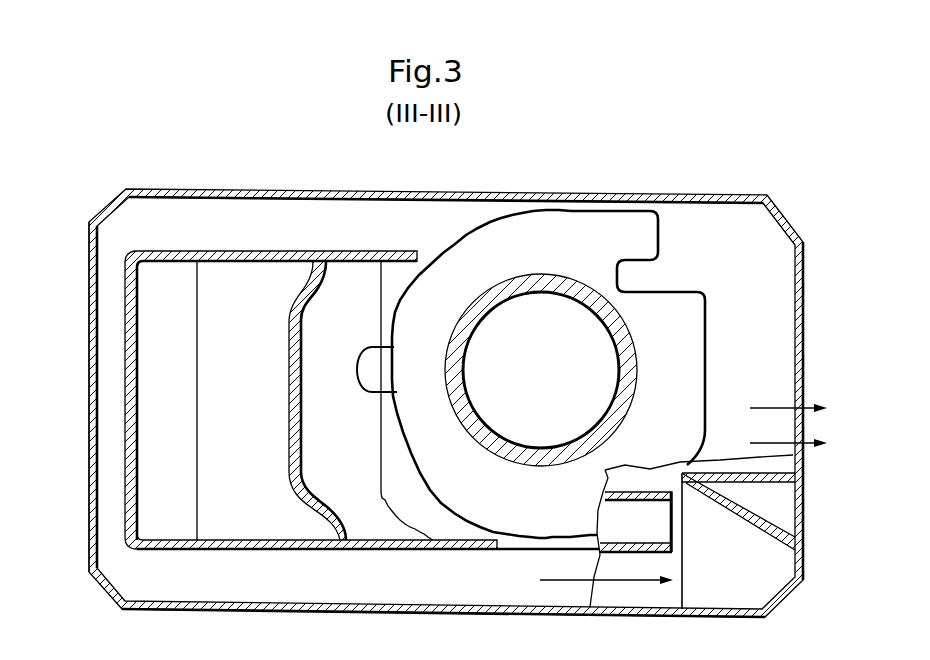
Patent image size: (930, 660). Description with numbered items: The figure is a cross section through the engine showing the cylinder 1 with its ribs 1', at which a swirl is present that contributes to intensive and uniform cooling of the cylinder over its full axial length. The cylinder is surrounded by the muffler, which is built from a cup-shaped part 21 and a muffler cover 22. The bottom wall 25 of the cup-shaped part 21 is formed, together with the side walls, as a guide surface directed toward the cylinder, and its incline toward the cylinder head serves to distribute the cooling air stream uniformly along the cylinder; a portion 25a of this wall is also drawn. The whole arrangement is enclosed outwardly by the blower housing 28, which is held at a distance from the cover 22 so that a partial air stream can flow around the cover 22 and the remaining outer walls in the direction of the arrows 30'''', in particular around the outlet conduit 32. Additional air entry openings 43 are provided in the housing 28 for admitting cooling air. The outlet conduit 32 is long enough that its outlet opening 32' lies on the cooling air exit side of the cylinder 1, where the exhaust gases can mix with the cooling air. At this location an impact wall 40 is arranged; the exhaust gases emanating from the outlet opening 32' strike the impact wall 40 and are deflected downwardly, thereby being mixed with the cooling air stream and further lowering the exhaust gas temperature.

The cylinder 1 is at (541, 357).
The ribs of cylinder 1' is at (531, 347).
The cup-shaped part 21 is at (372, 260).
The muffler cover 22 is at (130, 253).
The bottom wall 25 is at (288, 303).
The bottom wall portion 25a is at (455, 517).
The blower housing 28 is at (93, 487).
The arrows indicating partial air stream 30'''' is at (683, 532).
The outlet conduit 32 is at (636, 601).
The outlet opening 32' is at (691, 531).
The impact wall 40 is at (762, 519).
The additional air entry openings 43 is at (90, 248).